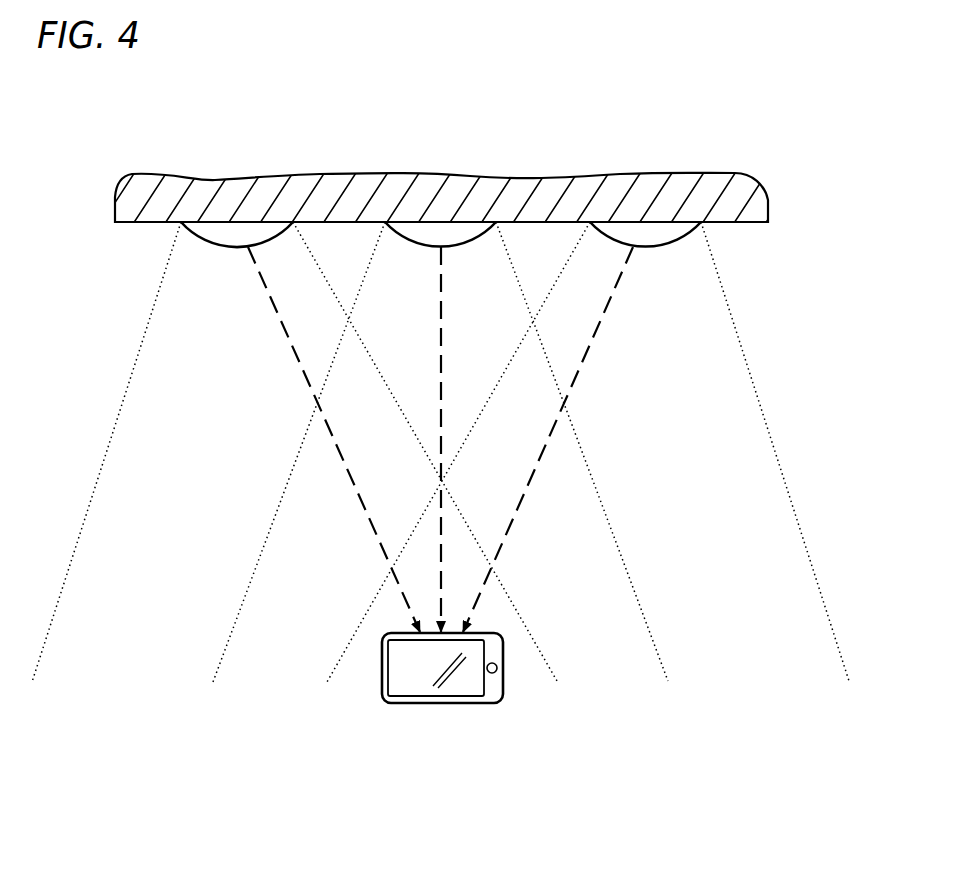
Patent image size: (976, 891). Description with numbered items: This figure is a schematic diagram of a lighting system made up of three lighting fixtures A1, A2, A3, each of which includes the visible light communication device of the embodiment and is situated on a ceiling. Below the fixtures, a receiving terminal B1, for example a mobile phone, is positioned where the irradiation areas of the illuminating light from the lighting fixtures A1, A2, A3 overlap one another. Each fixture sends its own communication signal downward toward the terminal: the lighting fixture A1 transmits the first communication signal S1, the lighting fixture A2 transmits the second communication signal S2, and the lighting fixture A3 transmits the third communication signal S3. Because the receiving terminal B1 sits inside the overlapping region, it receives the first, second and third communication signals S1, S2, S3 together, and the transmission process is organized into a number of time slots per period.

The lighting fixture A1 is at (215, 228).
The lighting fixture A2 is at (418, 235).
The lighting fixture A3 is at (662, 235).
The first communication signal S1 is at (334, 439).
The second communication signal S2 is at (456, 439).
The third communication signal S3 is at (548, 439).
The receiving terminal B1 is at (409, 690).